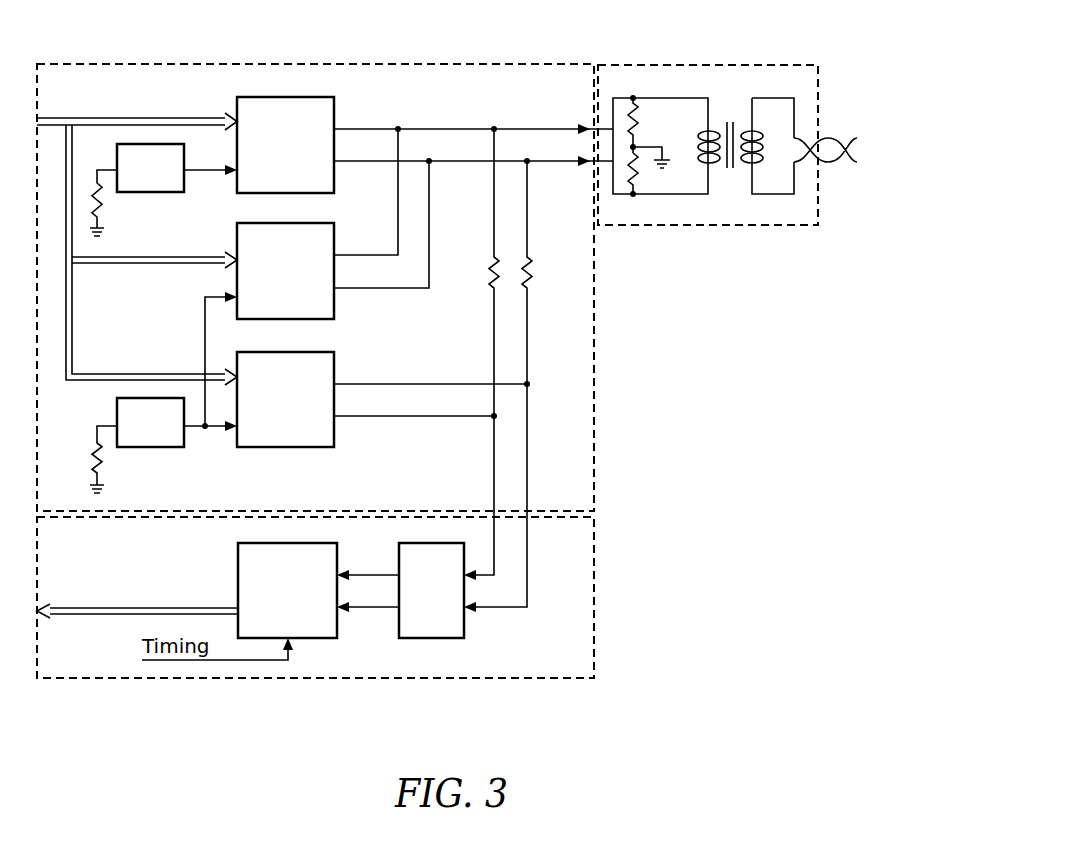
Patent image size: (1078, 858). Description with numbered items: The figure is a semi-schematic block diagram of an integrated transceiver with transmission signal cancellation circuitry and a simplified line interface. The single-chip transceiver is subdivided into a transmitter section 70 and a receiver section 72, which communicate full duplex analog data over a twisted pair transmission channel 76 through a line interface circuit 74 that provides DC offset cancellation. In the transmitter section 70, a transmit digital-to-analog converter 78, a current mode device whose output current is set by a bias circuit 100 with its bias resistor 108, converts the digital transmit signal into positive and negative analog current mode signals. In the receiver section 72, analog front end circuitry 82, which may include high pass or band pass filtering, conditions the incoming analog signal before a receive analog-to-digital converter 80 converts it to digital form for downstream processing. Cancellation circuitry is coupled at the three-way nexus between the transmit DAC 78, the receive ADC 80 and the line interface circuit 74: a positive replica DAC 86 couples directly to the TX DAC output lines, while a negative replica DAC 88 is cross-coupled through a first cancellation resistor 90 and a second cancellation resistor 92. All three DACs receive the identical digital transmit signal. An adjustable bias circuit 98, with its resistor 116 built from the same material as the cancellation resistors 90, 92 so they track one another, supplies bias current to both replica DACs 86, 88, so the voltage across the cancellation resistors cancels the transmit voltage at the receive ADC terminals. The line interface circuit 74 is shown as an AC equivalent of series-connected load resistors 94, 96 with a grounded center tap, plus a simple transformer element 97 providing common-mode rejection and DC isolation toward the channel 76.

The transmitter section 70 is at (594, 430).
The receiver section 72 is at (594, 575).
The line interface circuit 74 is at (708, 226).
The twisted pair transmission channel 76 is at (838, 138).
The transmit digital-to-analog converter 78 is at (320, 193).
The receive analog-to-digital converter 80 is at (238, 567).
The analog front end circuitry 82 is at (430, 640).
The positive replica DAC 86 is at (312, 319).
The negative replica DAC 88 is at (313, 447).
The first cancellation resistor 90 is at (488, 272).
The second cancellation resistor 92 is at (533, 270).
The load resistor 94 is at (645, 118).
The load resistor 96 is at (645, 175).
The transformer element 97 is at (733, 120).
The adjustable bias circuit 98 is at (172, 447).
The bias circuit 100 is at (142, 144).
The bias resistor 108 is at (98, 207).
The adjustable bias circuit resistor 116 is at (87, 463).